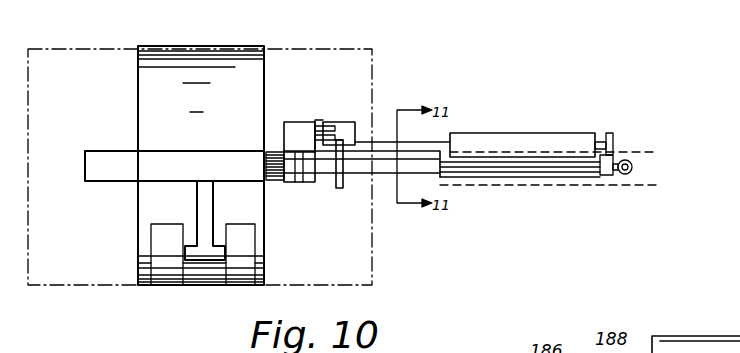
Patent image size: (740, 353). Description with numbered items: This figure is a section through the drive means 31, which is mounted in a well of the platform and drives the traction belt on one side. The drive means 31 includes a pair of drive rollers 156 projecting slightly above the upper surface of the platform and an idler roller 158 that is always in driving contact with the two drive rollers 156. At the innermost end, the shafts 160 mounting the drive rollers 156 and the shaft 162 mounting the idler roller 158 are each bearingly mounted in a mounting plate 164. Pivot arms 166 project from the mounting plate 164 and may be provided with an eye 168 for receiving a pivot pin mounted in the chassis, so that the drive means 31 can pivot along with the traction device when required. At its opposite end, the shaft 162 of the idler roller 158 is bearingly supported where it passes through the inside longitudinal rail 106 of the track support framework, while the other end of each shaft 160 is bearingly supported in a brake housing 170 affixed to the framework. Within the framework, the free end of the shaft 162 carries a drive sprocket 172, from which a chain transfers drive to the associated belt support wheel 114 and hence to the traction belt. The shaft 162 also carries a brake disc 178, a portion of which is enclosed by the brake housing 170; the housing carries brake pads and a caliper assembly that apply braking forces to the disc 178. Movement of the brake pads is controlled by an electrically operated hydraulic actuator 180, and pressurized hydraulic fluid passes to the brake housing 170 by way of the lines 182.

The belt support wheel 114 is at (150, 100).
The inside longitudinal rail 106 is at (310, 183).
The drive sprocket 172 is at (275, 182).
The electrically operated hydraulic actuator 180 is at (300, 121).
The lines 182 is at (320, 121).
The brake housing 170 is at (348, 120).
The brake disc 178 is at (340, 189).
The shaft 162 is at (385, 190).
The drive means 31 is at (529, 131).
The drive rollers 156 is at (505, 112).
The idler roller 158 is at (570, 170).
The shafts 160 is at (603, 141).
The mounting plate 164 is at (612, 133).
The pivot arms 166 is at (616, 176).
The eye 168 is at (633, 167).